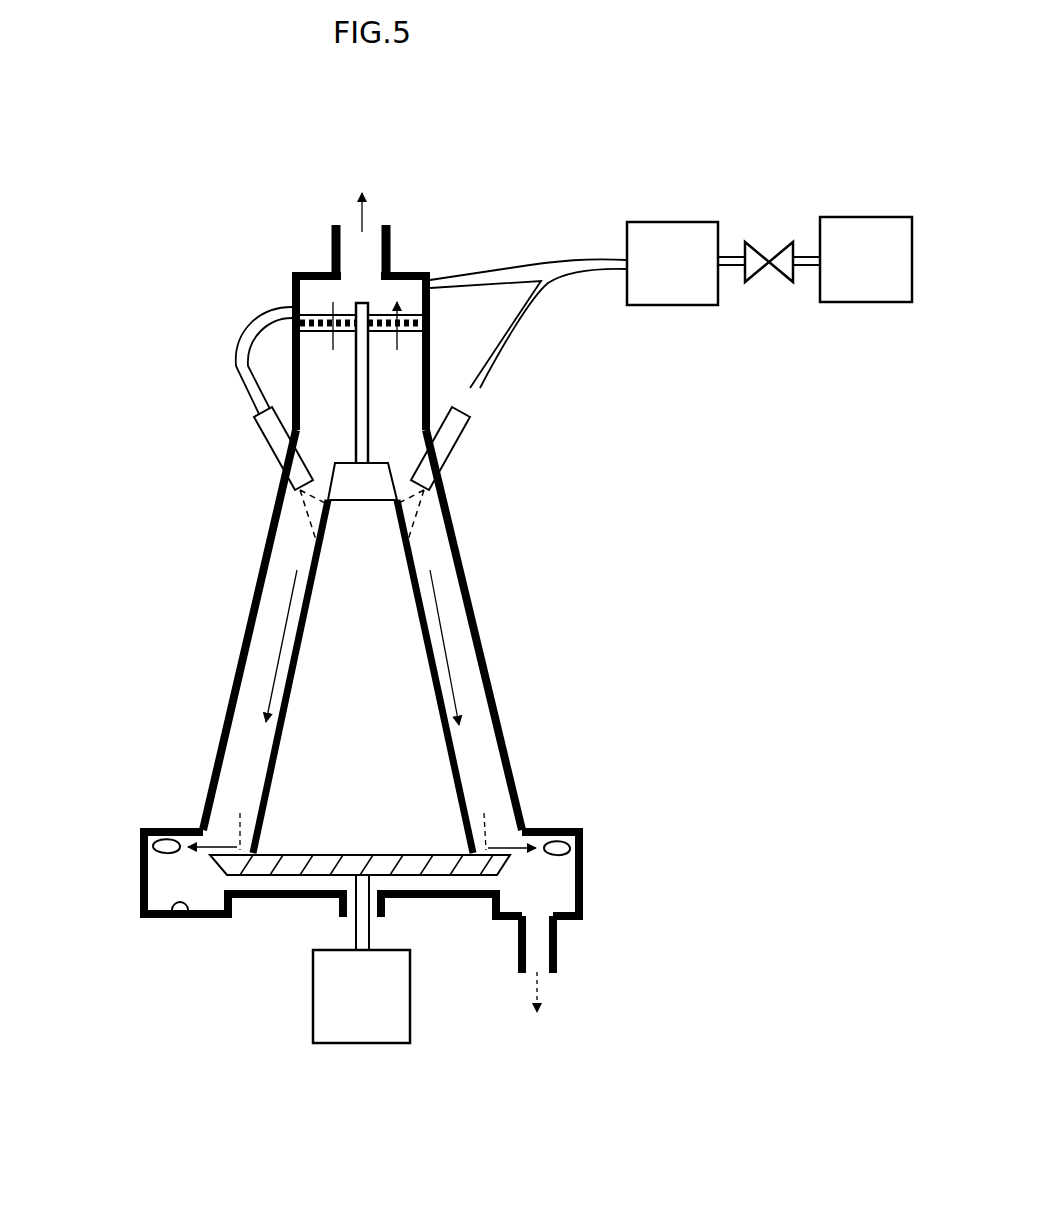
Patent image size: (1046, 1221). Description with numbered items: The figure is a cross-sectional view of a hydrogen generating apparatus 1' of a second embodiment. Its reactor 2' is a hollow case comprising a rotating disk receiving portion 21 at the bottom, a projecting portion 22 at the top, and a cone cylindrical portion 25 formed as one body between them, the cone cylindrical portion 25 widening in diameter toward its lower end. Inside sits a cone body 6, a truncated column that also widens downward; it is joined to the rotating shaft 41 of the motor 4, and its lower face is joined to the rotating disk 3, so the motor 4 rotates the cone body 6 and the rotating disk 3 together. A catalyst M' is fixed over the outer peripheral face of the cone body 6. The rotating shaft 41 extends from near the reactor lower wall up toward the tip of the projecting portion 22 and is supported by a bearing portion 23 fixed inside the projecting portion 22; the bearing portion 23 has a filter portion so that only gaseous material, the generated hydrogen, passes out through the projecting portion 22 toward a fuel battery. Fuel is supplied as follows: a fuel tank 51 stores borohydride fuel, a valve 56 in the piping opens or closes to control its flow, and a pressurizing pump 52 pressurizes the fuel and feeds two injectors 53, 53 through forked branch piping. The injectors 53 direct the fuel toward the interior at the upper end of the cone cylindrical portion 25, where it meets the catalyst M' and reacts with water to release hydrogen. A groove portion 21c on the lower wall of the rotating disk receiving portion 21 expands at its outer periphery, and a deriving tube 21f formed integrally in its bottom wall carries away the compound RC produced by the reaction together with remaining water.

The hydrogen generating apparatus 1' is at (482, 607).
The reactor 2' is at (376, 507).
The bearing portion 23 is at (313, 303).
The rotating shaft 41 is at (361, 300).
The projecting portion 22 is at (430, 338).
The pressurizing pump 52 is at (671, 222).
The valve 56 is at (782, 242).
The fuel tank 51 is at (863, 217).
The injector 53 is at (270, 452).
The cone cylindrical portion 25 is at (252, 605).
The cone body 6 is at (420, 638).
The catalyst M' is at (430, 666).
The compound RC is at (163, 827).
The rotating disk receiving portion 21 is at (140, 880).
The groove portion 21c is at (189, 920).
The rotating disk 3 is at (510, 868).
The deriving tube 21f is at (557, 948).
The motor 4 is at (410, 1027).